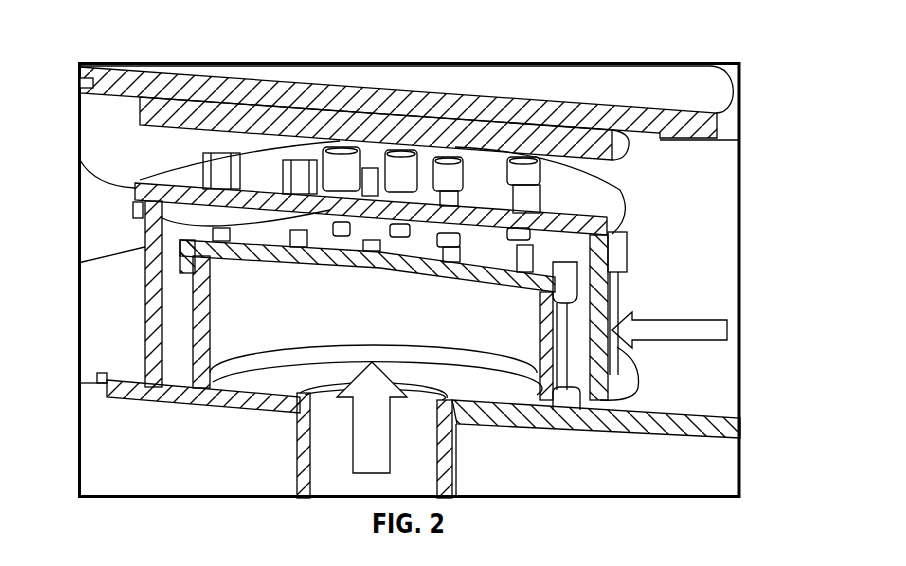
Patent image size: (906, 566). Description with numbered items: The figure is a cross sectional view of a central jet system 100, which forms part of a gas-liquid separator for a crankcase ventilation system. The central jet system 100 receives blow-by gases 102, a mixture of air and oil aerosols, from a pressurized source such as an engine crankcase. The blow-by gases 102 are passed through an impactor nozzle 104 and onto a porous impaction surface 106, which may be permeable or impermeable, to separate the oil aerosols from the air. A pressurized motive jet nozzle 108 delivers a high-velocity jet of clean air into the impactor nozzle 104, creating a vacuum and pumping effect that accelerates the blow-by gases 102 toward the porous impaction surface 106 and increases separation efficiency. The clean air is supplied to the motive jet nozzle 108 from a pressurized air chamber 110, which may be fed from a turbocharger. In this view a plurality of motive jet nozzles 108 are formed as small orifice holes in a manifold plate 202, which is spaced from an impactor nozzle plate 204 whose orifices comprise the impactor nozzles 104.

The central jet system 100 is at (104, 29).
The blow-by gases 102 is at (693, 329).
The impactor nozzle 104 is at (542, 207).
The porous impaction surface 106 is at (264, 121).
The motive jet nozzle 108 is at (80, 160).
The pressurized air chamber 110 is at (354, 317).
The manifold plate 202 is at (627, 229).
The impactor nozzle plate 204 is at (462, 206).